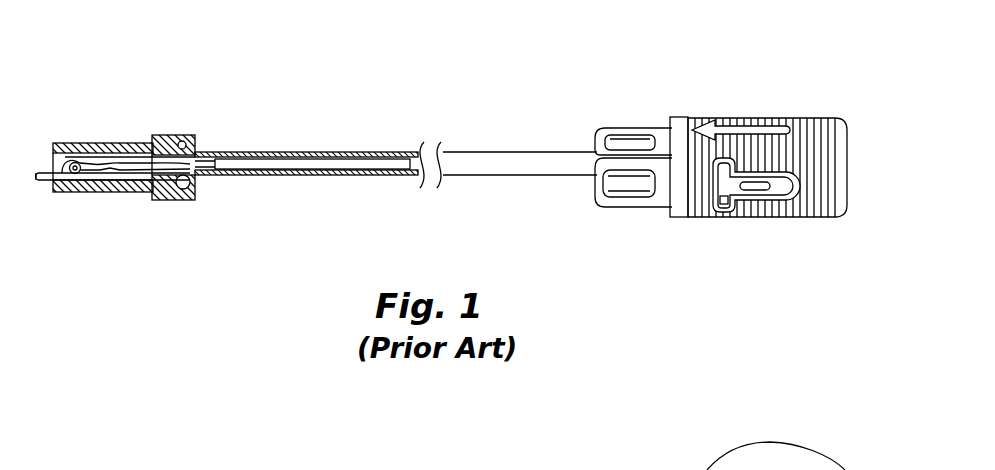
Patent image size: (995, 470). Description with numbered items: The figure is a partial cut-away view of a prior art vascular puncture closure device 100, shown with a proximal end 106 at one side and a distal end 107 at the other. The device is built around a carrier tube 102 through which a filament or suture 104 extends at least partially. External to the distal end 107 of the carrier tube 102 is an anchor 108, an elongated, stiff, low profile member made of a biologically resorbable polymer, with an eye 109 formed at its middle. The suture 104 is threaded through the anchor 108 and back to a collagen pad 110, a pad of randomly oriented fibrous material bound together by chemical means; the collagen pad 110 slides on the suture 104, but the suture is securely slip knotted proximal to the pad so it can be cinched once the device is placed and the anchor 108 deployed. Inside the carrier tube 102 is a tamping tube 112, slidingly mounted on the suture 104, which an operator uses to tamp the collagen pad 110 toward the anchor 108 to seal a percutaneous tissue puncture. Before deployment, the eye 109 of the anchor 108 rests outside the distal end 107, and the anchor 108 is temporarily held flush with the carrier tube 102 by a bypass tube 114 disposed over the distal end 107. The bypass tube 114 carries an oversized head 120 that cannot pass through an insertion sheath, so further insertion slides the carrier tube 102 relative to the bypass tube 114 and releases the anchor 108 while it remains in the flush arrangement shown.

The vascular puncture closure device 100 is at (418, 106).
The carrier tube 102 is at (326, 150).
The suture 104 is at (199, 150).
The proximal end 106 is at (664, 125).
The distal end 107 is at (115, 143).
The anchor 108 is at (42, 172).
The eye 109 is at (42, 186).
The collagen pad 110 is at (132, 182).
The tamping tube 112 is at (280, 172).
The bypass tube 114 is at (115, 194).
The oversized head 120 is at (183, 202).